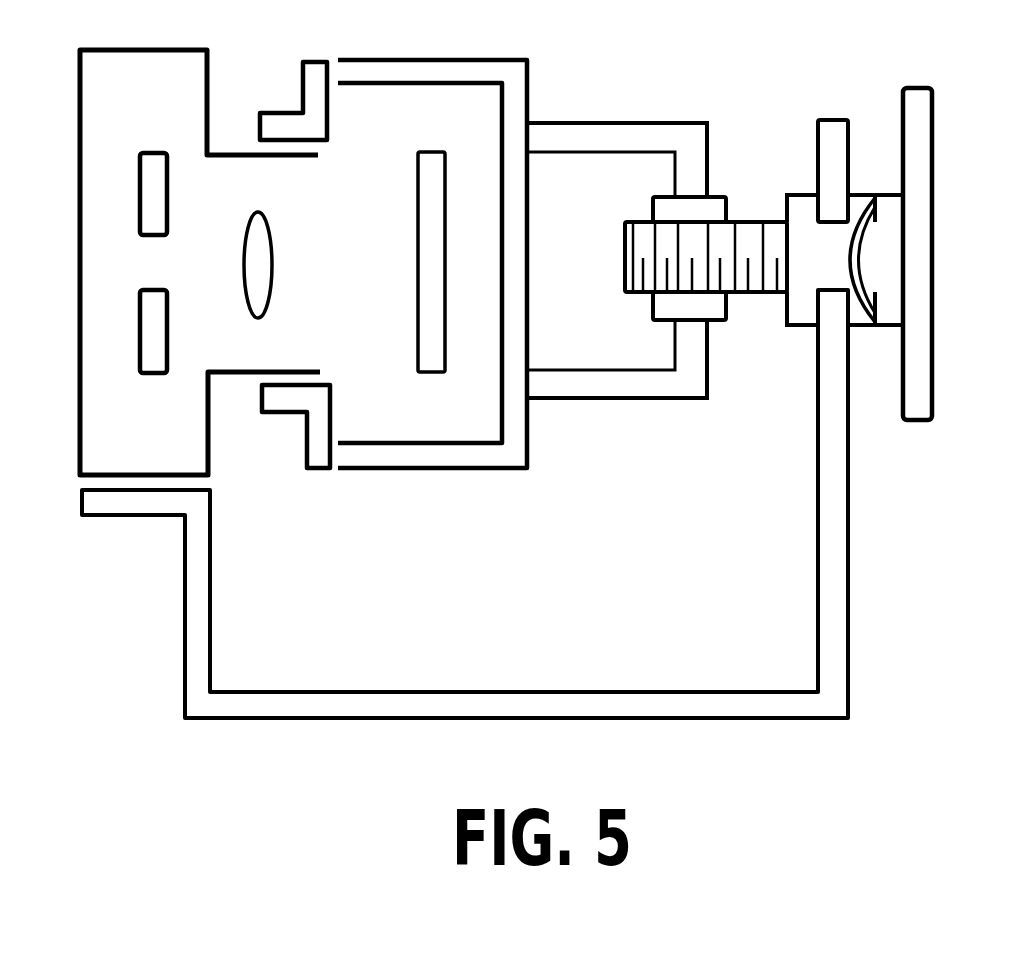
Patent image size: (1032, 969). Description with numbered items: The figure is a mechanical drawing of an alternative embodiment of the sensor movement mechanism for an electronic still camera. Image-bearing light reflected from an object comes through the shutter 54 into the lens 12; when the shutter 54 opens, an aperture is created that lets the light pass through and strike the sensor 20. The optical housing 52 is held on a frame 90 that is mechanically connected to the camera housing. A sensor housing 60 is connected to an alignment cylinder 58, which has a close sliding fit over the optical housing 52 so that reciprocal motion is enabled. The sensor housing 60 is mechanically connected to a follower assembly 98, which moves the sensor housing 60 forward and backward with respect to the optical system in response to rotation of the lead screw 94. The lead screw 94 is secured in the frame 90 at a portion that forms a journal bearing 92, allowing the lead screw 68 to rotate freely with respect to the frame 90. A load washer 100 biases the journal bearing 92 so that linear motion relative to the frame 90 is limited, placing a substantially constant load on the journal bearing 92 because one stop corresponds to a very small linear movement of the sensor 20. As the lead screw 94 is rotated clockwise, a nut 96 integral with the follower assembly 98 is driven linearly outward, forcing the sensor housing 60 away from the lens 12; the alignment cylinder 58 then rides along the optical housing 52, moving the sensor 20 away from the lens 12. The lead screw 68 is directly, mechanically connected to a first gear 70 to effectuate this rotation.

The lens 12 is at (263, 232).
The sensor 20 is at (420, 305).
The optical housing 52 is at (148, 480).
The shutter 54 is at (142, 183).
The alignment cylinder 58 is at (287, 405).
The sensor housing 60 is at (482, 460).
The lead screw 68 is at (913, 248).
The first gear 70 is at (917, 132).
The frame 90 is at (579, 705).
The journal bearing 92 is at (885, 267).
The lead screw 94 is at (717, 250).
The nut 96 is at (712, 202).
The follower assembly 98 is at (613, 135).
The load washer 100 is at (857, 213).